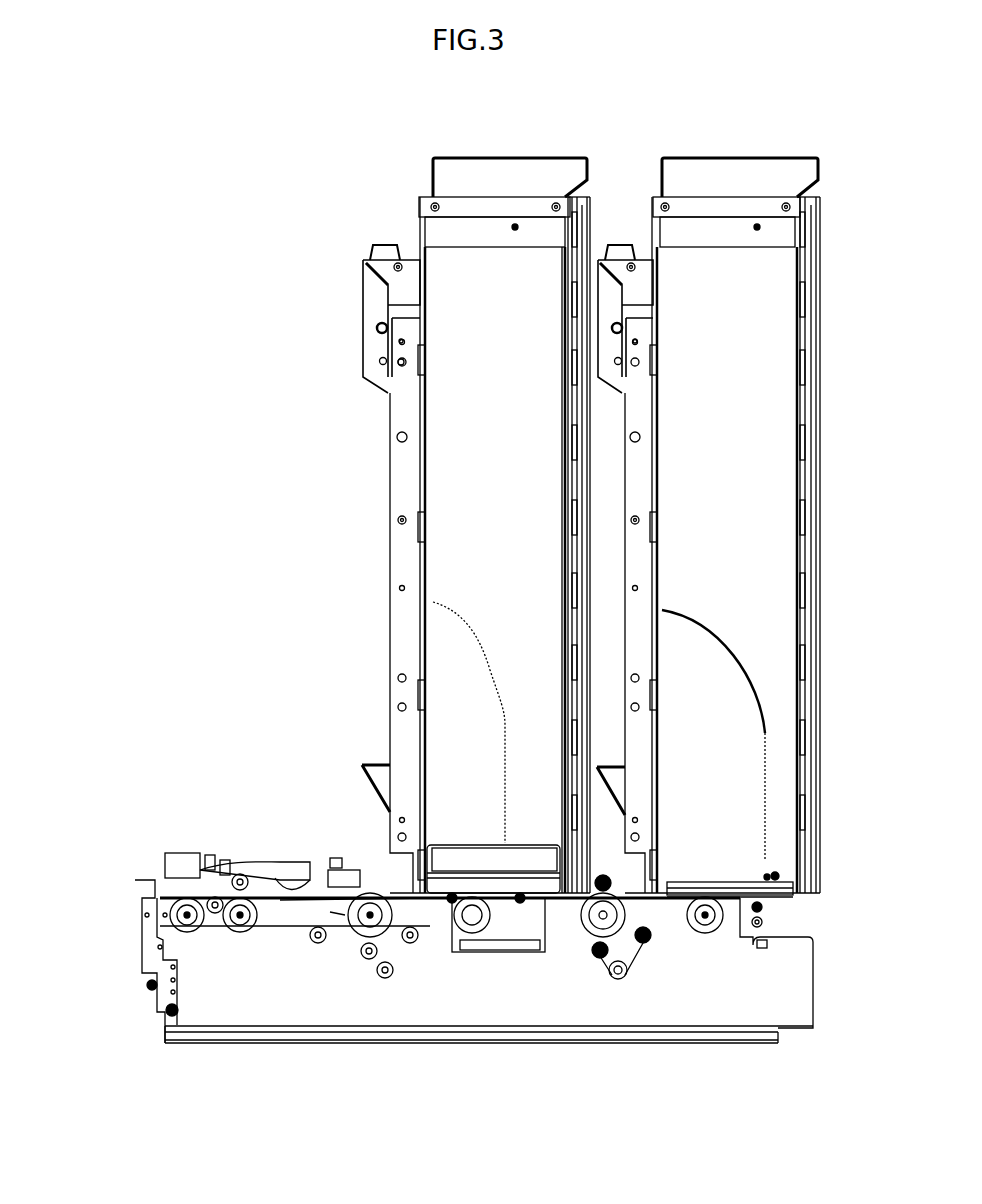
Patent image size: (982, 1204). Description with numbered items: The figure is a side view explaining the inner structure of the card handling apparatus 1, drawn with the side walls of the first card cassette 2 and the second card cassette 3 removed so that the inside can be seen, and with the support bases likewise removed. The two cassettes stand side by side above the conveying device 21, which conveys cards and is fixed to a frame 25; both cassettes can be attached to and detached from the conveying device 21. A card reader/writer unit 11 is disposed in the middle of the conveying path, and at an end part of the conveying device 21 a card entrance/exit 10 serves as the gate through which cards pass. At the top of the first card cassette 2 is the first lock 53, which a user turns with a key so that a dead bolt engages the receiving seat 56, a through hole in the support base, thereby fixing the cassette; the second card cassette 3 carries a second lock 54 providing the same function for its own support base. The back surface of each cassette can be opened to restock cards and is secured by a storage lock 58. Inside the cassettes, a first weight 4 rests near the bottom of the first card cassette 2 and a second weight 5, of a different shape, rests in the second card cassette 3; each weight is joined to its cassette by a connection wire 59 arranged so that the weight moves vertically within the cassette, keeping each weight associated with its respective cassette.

The card handling apparatus 1 is at (232, 566).
The first card cassette 2 is at (450, 471).
The second card cassette 3 is at (770, 564).
The first weight 4 is at (455, 855).
The second weight 5 is at (728, 880).
The card entrance/exit 10 is at (135, 892).
The card reader/writer unit 11 is at (312, 868).
The conveying device 21 is at (716, 951).
The frame 25 is at (803, 943).
The first lock 53 is at (388, 245).
The second lock 54 is at (622, 246).
The receiving seat 56 is at (360, 279).
The storage lock 58 is at (584, 222).
The connection wire 59 is at (476, 635).